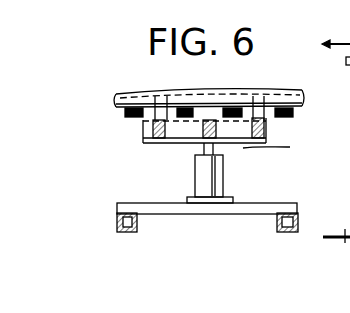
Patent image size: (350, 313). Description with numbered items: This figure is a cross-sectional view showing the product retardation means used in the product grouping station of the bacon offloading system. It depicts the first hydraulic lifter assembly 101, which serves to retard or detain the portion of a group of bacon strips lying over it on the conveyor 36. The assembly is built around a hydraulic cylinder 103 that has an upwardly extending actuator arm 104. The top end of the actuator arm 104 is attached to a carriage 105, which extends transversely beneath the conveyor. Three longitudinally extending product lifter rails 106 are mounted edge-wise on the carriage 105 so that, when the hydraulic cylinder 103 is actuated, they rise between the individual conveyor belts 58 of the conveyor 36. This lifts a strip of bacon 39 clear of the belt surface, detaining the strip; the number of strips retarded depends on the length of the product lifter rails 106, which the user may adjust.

The strip of bacon 39 is at (141, 108).
The individual conveyor belts 58 is at (233, 110).
The product lifter rails 106 is at (153, 128).
The actuator arm 104 is at (200, 142).
The carriage 105 is at (222, 135).
The hydraulic cylinder 103 is at (202, 177).
The first hydraulic lifter assembly 101 is at (217, 214).
The conveyor 36 is at (337, 230).